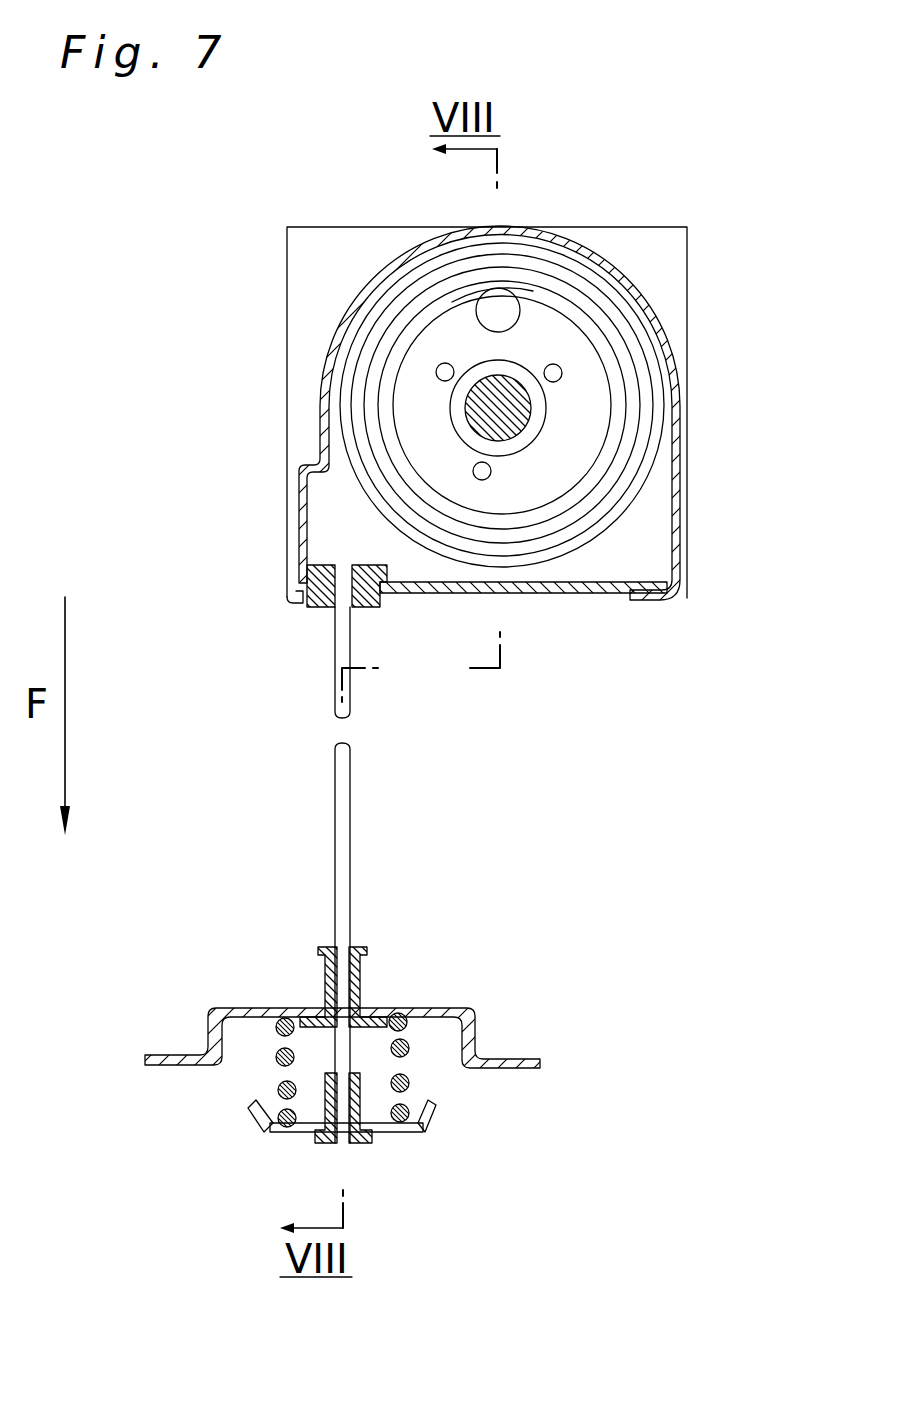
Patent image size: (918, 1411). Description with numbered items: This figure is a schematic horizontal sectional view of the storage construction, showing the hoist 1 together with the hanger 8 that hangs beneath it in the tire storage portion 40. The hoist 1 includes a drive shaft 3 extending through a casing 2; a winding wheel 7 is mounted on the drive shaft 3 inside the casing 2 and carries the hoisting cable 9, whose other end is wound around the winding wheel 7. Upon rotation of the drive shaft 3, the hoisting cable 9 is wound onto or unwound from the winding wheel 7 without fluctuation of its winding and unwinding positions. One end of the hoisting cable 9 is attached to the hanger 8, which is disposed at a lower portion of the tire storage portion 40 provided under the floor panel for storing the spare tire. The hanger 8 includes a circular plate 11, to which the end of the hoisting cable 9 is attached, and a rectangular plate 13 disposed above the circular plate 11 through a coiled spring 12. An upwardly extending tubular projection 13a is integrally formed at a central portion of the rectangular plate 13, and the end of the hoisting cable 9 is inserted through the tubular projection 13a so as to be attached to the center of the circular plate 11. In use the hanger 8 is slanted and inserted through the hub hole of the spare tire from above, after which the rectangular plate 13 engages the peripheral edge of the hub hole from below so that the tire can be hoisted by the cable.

The hoist 1 is at (609, 204).
The casing 2 is at (683, 493).
The drive shaft 3 is at (527, 403).
The winding wheel 7 is at (543, 482).
The hanger 8 is at (495, 984).
The hoisting cable 9 is at (340, 824).
The circular plate 11 is at (266, 1120).
The coiled spring 12 is at (408, 1083).
The rectangular plate 13 is at (450, 1008).
The tubular projection 13a is at (322, 972).
The tire storage portion 40 is at (443, 1168).